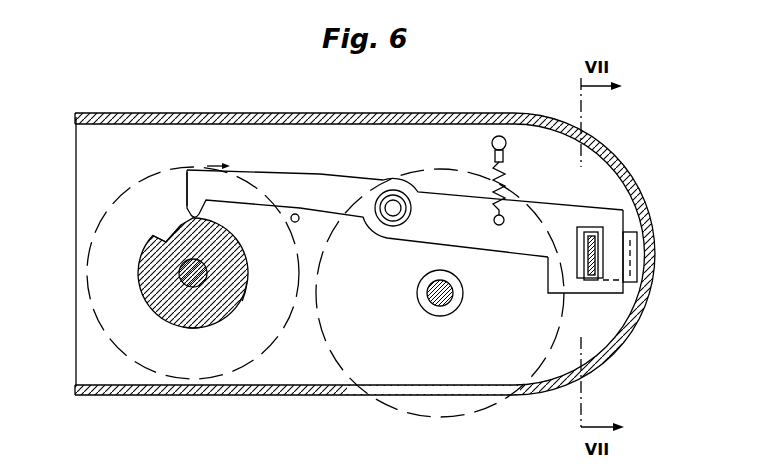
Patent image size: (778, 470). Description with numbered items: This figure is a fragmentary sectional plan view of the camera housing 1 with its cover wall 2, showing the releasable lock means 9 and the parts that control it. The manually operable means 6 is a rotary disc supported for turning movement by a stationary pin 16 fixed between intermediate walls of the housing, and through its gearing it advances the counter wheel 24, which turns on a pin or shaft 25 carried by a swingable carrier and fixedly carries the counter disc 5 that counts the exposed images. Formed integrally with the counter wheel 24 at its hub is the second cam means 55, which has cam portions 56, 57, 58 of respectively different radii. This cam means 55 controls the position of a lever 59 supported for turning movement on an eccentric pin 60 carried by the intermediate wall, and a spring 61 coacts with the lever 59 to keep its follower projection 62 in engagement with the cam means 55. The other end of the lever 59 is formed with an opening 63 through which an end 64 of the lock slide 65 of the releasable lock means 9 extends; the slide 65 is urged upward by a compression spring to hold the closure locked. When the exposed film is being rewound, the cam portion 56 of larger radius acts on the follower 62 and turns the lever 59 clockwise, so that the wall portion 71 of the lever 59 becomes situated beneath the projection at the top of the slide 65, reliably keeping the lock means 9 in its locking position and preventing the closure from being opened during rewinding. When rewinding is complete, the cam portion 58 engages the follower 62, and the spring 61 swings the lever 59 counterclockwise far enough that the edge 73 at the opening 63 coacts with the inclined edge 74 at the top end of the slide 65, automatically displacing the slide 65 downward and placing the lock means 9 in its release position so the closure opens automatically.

The housing 1 is at (175, 111).
The cover plate wall 2 is at (78, 117).
The counter disc 5 is at (140, 363).
The manually operable means 6 is at (385, 410).
The releasable lock means 9 is at (661, 226).
The stationary pin 16 is at (447, 300).
The counter wheel 24 is at (207, 310).
The pin or shaft 25 is at (190, 271).
The second cam means 55 is at (181, 338).
The cam portion 56 is at (143, 307).
The cam portion 57 is at (245, 287).
The cam portion 58 is at (168, 230).
The lever 59 is at (282, 190).
The eccentric pin 60 is at (395, 200).
The spring 61 is at (505, 186).
The follower projection 62 is at (186, 191).
The opening 63 is at (578, 230).
The end of lock slide 64 is at (592, 250).
The lock slide 65 is at (638, 263).
The wall portion 71 is at (598, 212).
The edge 73 is at (577, 278).
The inclined edge 74 is at (591, 281).